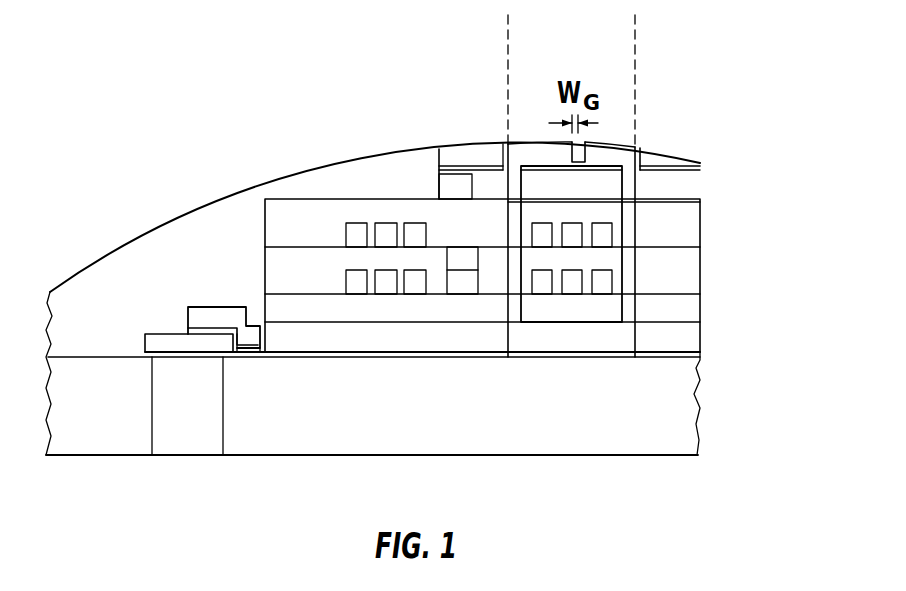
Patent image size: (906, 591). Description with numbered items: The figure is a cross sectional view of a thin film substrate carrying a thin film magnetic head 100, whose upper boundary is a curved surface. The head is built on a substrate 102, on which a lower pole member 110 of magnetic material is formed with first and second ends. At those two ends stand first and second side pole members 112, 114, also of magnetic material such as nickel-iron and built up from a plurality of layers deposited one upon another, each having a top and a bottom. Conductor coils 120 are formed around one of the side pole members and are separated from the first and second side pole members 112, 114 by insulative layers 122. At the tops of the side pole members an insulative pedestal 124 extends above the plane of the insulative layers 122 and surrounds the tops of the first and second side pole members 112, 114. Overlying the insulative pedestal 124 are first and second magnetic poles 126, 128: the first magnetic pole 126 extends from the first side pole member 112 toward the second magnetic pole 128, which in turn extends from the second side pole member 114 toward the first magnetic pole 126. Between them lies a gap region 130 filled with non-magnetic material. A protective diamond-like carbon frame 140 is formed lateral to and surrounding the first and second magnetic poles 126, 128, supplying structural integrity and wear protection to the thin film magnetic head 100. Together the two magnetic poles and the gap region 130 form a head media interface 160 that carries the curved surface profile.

The thin film magnetic head 100 is at (166, 130).
The substrate 102 is at (703, 412).
The lower pole member 110 is at (563, 343).
The first side pole member 112 is at (513, 225).
The second side pole member 114 is at (629, 232).
The conductor coils 120 is at (607, 281).
The insulative layers 122 is at (615, 218).
The insulative pedestal 124 is at (615, 185).
The first magnetic pole 126 is at (528, 158).
The second magnetic pole 128 is at (627, 149).
The gap region 130 is at (588, 148).
The protective diamond-like carbon (DLC) frame 140 is at (447, 157).
The head media interface (HMI) 160 is at (635, 24).